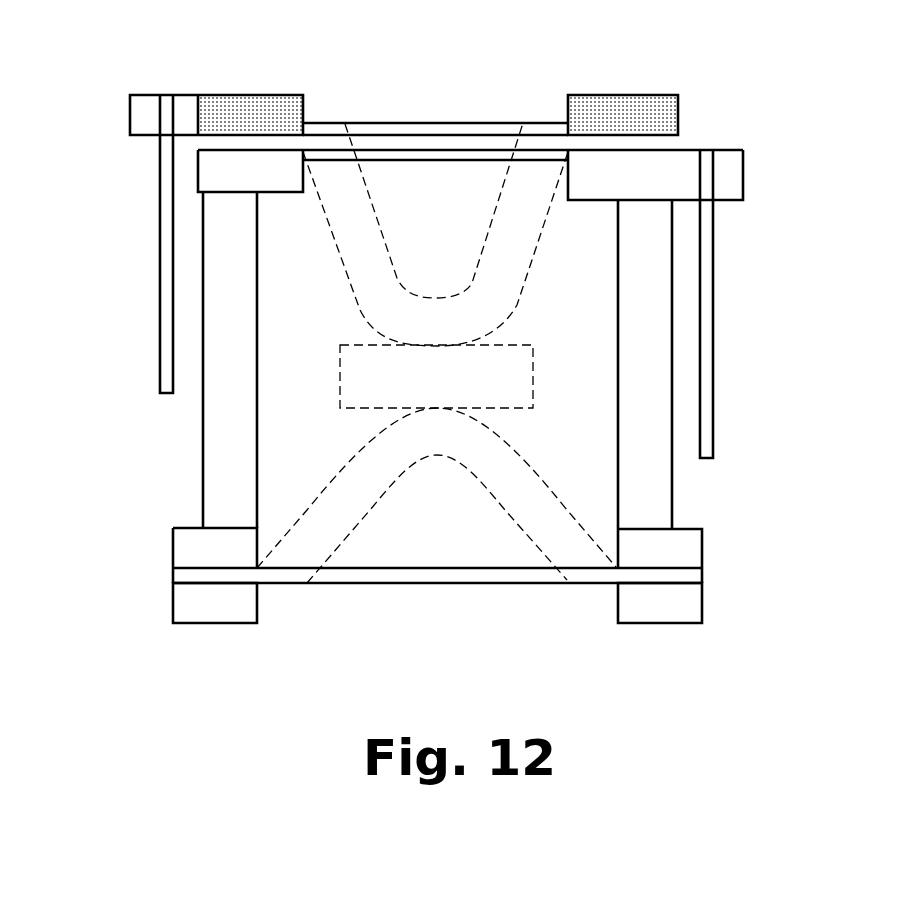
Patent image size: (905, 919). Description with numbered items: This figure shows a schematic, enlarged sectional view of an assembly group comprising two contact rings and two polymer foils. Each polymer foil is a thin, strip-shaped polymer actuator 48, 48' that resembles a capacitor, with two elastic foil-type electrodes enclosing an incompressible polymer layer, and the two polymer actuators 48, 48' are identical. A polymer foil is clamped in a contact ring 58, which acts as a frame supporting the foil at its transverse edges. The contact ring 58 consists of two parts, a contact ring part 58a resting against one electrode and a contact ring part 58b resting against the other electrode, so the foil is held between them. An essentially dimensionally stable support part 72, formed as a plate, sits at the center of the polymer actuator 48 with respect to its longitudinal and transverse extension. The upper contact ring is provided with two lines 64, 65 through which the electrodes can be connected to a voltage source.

The contact ring 58 is at (775, 90).
The contact ring part 58a is at (240, 93).
The contact ring part 58b is at (217, 173).
The line 64 is at (707, 280).
The line 65 is at (168, 275).
The polymer actuator 48 is at (436, 540).
The polymer actuator 48' is at (435, 234).
The support part 72 is at (515, 387).